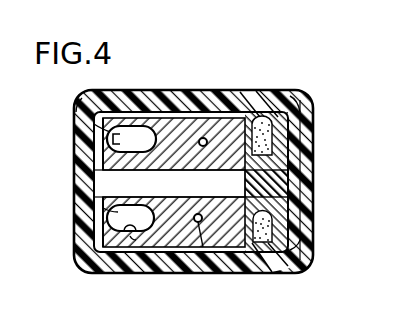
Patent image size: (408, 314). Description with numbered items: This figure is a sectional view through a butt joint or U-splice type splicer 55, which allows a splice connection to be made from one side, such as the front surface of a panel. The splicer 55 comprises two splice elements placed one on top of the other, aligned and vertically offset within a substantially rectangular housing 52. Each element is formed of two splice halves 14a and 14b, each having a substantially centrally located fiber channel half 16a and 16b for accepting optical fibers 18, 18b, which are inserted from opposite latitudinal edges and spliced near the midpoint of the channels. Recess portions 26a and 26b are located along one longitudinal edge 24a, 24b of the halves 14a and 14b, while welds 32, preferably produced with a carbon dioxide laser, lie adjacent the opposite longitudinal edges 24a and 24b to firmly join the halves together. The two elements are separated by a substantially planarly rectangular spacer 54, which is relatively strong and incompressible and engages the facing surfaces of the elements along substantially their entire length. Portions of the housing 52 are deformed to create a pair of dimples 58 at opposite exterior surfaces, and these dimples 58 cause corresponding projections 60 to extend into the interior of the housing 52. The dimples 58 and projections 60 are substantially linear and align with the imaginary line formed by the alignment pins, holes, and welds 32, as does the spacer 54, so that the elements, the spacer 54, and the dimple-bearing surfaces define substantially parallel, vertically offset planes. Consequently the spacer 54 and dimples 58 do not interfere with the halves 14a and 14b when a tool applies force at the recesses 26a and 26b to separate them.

The splicer 55 is at (305, 70).
The housing 52 is at (181, 90).
The dimples 58 is at (262, 90).
The splice half 14a is at (95, 178).
The splice half 14b is at (133, 115).
The fiber channel half 16a is at (194, 215).
The fiber channel half 16b is at (204, 138).
The optical fiber 18 is at (222, 110).
The optical fiber 18b is at (192, 216).
The longitudinal edge 24a is at (112, 150).
The longitudinal edge 24b is at (275, 138).
The recess portion 26a is at (82, 98).
The recess portion 26b is at (100, 132).
The welds 32 is at (300, 110).
The spacer 54 is at (292, 160).
The projections 60 is at (297, 98).